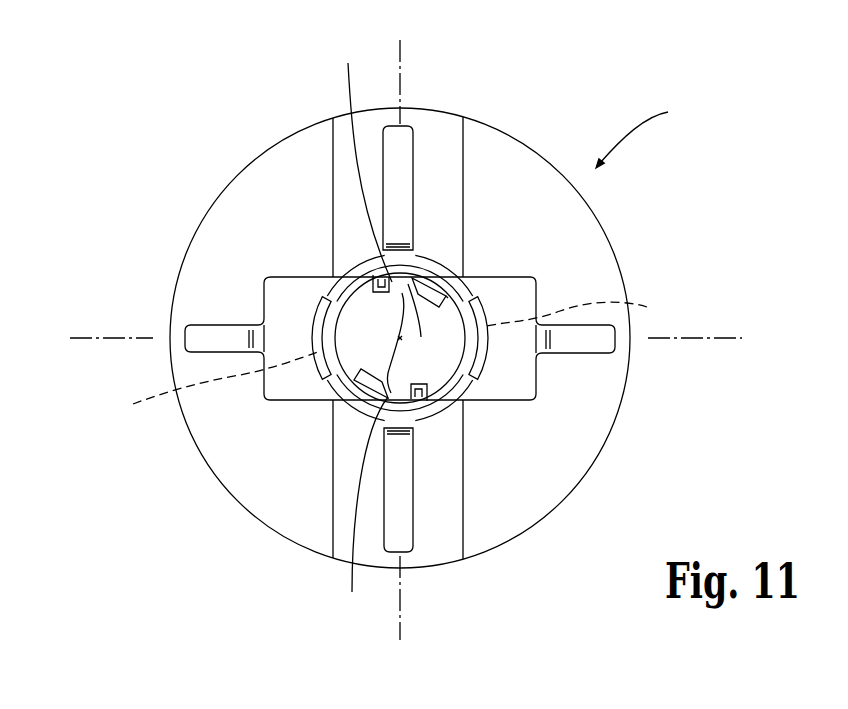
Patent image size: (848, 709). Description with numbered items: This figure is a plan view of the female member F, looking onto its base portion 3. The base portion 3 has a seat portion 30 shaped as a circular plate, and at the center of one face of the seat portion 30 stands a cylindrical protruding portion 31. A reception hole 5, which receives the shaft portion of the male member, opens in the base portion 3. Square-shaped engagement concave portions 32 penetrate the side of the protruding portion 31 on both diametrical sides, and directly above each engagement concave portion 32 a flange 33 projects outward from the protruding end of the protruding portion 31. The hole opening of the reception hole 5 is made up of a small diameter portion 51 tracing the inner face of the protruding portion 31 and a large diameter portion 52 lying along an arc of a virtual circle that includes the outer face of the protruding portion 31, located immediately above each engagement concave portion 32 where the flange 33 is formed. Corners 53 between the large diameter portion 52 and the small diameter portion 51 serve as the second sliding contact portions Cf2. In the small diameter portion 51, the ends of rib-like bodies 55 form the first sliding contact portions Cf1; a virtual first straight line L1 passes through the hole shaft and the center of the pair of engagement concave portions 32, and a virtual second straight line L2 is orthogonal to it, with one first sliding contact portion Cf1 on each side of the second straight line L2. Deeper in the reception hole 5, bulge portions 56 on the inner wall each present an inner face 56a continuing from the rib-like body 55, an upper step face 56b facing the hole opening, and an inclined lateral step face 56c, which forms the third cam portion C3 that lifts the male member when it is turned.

The base portion 3 is at (600, 253).
The reception hole 5 is at (437, 393).
The seat portion 30 is at (604, 282).
The protruding portion 31 is at (422, 282).
The engagement concave portion 32 is at (389, 356).
The flange 33 is at (288, 277).
The small diameter portion 51 is at (410, 280).
The large diameter portion 52 is at (314, 320).
The corner 53 is at (482, 286).
The rib-like body 55 is at (402, 282).
The bulge portion 56 is at (354, 332).
The inner face 56a is at (401, 301).
The upper step face 56b is at (413, 395).
The lateral step face 56c is at (447, 287).
The third cam portion C3 is at (405, 310).
The first sliding contact portion Cf1 is at (396, 340).
The second sliding contact portion Cf2 is at (376, 308).
The female member F is at (641, 134).
The virtual first straight line L1 is at (405, 340).
The virtual second straight line L2 is at (402, 338).